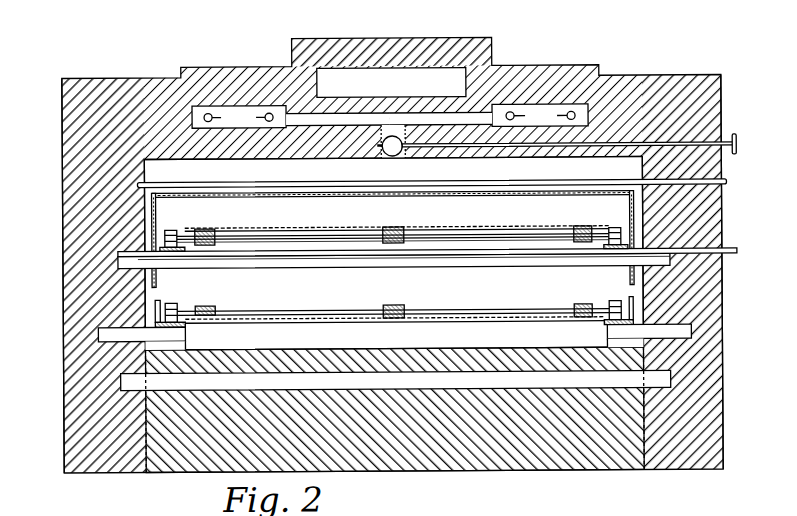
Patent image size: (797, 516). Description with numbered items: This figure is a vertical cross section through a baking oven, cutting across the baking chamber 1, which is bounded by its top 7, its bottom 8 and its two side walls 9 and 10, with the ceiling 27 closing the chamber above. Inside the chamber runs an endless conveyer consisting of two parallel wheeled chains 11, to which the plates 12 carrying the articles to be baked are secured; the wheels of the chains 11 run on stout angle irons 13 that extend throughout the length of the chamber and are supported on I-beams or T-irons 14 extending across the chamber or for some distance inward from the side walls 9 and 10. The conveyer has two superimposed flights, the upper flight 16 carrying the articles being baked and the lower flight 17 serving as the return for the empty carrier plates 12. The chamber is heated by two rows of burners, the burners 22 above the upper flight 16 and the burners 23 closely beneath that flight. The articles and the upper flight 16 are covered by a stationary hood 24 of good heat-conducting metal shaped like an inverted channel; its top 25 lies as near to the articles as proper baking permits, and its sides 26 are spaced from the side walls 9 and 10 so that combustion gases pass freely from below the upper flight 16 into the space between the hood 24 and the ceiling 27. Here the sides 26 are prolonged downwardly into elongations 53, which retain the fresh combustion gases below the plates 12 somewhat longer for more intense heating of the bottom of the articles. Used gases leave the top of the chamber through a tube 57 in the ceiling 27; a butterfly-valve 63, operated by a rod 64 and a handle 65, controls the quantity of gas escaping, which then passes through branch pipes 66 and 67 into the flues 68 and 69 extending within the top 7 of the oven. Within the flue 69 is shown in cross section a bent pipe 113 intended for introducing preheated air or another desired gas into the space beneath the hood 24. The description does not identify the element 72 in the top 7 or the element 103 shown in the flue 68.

The baking chamber 1 is at (395, 330).
The top 7 is at (389, 38).
The bottom 8 is at (394, 410).
The side wall 9 is at (104, 275).
The side wall 10 is at (682, 271).
The wheeled chains 11 is at (170, 229).
The plates 12 is at (288, 226).
The angle irons 13 is at (176, 249).
The I-beams or T-irons 14 is at (283, 260).
The upper conveyer flight 16 is at (476, 233).
The lower conveyer flight 17 is at (443, 313).
The burners 22 is at (727, 183).
The burners 23 is at (737, 250).
The hood 24 is at (397, 214).
The top of hood 25 is at (497, 193).
The sides of hood 26 is at (151, 213).
The ceiling 27 is at (263, 160).
The elongations 53 is at (155, 285).
The tube 57 is at (381, 138).
The butterfly-valves 63 is at (413, 141).
The rod 64 is at (700, 137).
The handle 65 is at (748, 134).
The branch pipe 66 is at (337, 122).
The branch pipe 67 is at (440, 121).
The flue 68 is at (247, 106).
The flue 69 is at (531, 106).
The recess 72 is at (391, 83).
The left terminal 103 is at (238, 119).
The bent pipe 113 is at (540, 117).